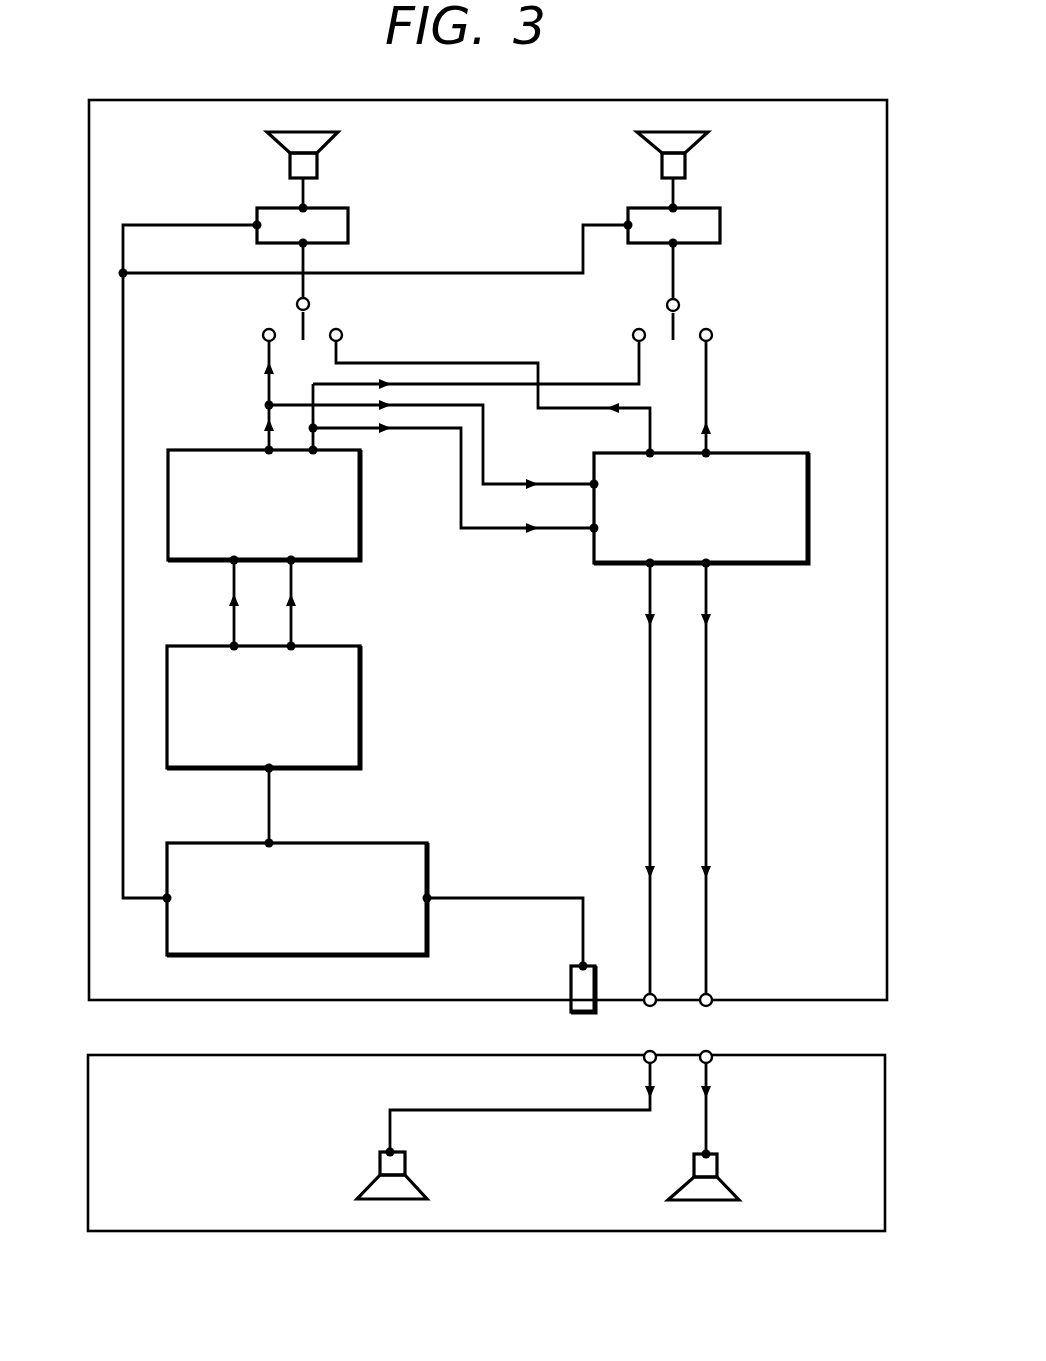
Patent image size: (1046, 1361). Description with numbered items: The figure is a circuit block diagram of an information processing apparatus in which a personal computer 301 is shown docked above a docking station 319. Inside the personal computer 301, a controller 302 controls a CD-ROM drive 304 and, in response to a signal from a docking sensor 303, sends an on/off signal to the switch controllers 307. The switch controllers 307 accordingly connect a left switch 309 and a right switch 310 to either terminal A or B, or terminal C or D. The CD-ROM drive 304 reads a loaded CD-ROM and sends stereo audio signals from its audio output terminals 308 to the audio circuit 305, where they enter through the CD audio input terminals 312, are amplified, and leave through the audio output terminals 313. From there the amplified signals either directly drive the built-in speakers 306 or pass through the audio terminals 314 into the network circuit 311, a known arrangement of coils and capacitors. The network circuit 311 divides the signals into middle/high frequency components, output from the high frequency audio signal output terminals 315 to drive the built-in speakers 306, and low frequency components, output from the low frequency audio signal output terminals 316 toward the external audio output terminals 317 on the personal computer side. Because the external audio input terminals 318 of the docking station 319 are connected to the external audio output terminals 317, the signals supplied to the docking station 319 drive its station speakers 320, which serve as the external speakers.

The personal computer 301 is at (953, 701).
The controller 302 is at (429, 856).
The docking sensor 303 is at (572, 1010).
The CD-ROM drive 304 is at (362, 758).
The audio circuit 305 is at (210, 449).
The built-in speakers 306 is at (282, 147).
The switch controllers 307 is at (350, 226).
The audio output terminals 308 is at (238, 650).
The left switch 309 is at (298, 322).
The right switch 310 is at (683, 325).
The network circuit 311 is at (810, 497).
The CD audio input terminals 312 is at (292, 556).
The audio output terminals 313 is at (272, 456).
The audio terminals 314 is at (600, 490).
The high frequency audio signal output terminals 315 is at (660, 462).
The low frequency audio signal output terminals 316 is at (656, 560).
The external audio output terminals 317 is at (660, 995).
The external audio input terminals 318 is at (660, 1052).
The docking station 319 is at (870, 1120).
The station speakers 320 is at (362, 1187).